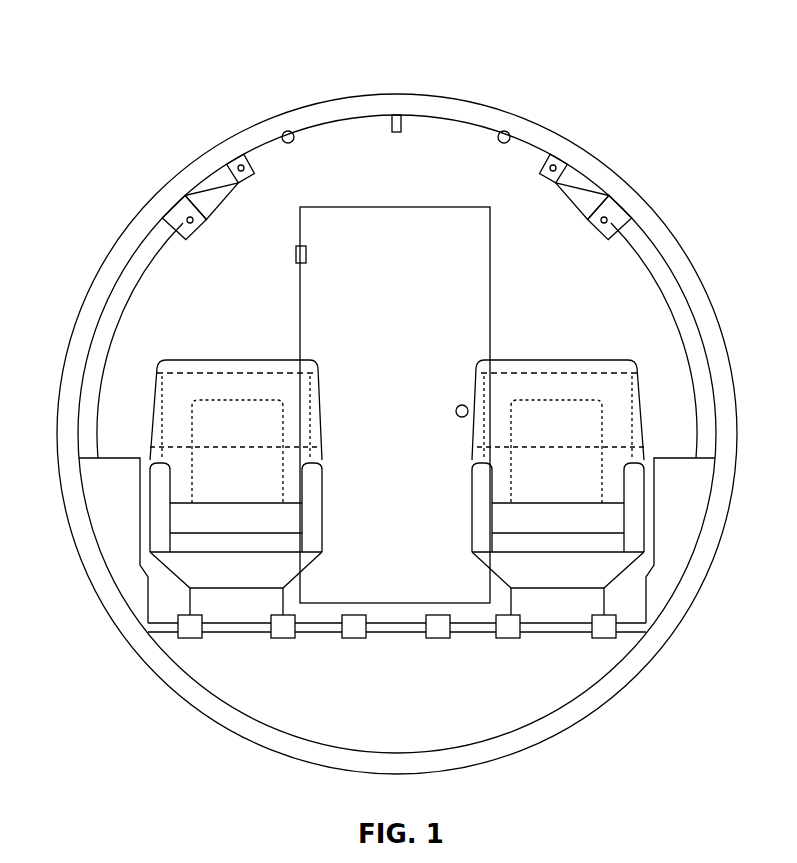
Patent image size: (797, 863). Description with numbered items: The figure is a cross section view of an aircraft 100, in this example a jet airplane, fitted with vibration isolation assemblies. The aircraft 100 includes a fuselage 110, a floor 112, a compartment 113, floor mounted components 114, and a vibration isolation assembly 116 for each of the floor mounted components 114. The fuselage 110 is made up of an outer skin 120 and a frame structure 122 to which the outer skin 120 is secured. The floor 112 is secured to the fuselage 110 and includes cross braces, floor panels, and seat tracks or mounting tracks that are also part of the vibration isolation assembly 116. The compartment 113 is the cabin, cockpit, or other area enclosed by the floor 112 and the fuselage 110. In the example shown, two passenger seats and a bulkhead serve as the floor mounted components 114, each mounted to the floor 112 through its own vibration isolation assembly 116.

The aircraft 100 is at (130, 52).
The fuselage 110 is at (618, 180).
The floor 112 is at (322, 634).
The compartment 113 is at (506, 131).
The floor mounted components 114 is at (152, 378).
The vibration isolation assembly 116 is at (260, 660).
The outer skin 120 is at (648, 660).
The frame structure 122 is at (288, 131).